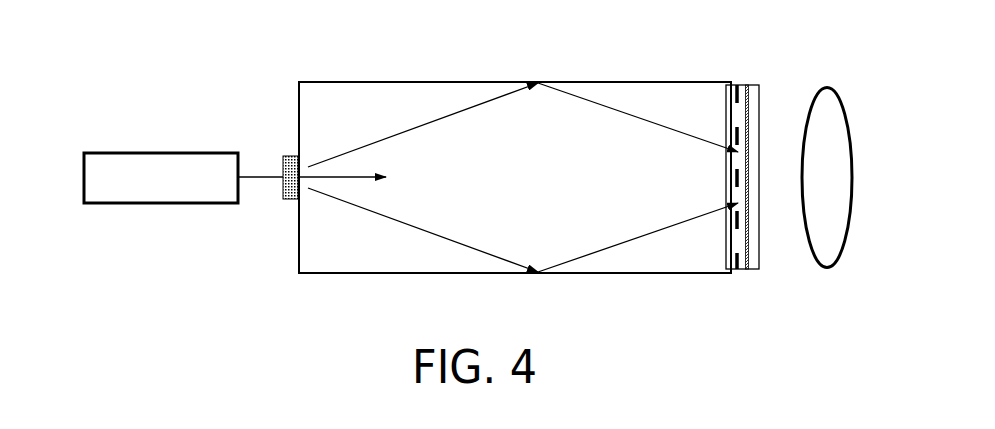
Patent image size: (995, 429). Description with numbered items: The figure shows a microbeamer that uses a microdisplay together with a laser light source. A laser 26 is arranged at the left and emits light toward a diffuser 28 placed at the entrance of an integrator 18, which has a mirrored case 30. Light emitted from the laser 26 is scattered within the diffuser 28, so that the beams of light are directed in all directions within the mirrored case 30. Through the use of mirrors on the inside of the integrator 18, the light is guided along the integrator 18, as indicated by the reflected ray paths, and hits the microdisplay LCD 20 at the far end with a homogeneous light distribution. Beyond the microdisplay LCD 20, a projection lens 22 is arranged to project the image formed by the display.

The integrator 18 is at (647, 82).
The microdisplay LCD 20 is at (750, 85).
The projection lens 22 is at (825, 86).
The laser 26 is at (108, 150).
The diffuser 28 is at (280, 146).
The mirrored case 30 is at (281, 229).